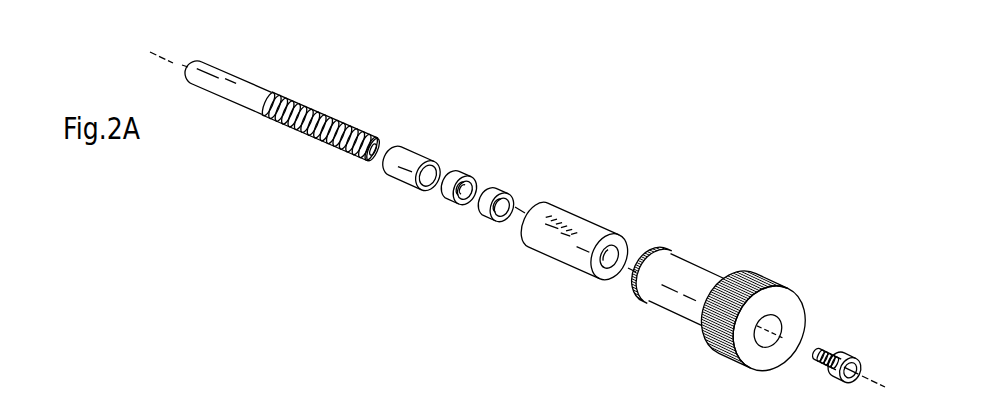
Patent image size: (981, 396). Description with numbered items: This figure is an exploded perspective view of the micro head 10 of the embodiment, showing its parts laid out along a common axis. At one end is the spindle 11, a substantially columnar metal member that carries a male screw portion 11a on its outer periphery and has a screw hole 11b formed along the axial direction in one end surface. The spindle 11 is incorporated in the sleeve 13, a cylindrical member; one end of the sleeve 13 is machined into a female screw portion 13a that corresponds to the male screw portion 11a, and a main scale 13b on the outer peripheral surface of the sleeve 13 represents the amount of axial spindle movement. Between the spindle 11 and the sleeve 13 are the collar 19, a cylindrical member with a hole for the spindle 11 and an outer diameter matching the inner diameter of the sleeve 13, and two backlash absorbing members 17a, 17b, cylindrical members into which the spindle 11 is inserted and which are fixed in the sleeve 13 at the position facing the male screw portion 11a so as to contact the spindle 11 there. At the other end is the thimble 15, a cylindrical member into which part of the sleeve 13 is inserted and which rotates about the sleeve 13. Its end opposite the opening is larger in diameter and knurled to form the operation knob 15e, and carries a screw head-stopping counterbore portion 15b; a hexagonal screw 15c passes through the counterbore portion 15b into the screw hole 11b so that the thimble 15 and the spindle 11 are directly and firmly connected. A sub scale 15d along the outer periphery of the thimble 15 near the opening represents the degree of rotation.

The micro head 10 is at (576, 86).
The spindle 11 is at (255, 93).
The male screw portion 11a is at (333, 120).
The screw hole 11b is at (370, 160).
The collar 19 is at (413, 155).
The backlash absorbing member 17a is at (458, 177).
The backlash absorbing member 17b is at (498, 190).
The sleeve 13 is at (585, 227).
The female screw portion 13a is at (602, 282).
The main scale 13b is at (542, 230).
The thimble 15 is at (685, 277).
The counterbore portion 15b is at (775, 322).
The hexagonal screw 15c is at (848, 357).
The sub scale 15d is at (657, 247).
The operation knob 15e is at (757, 280).